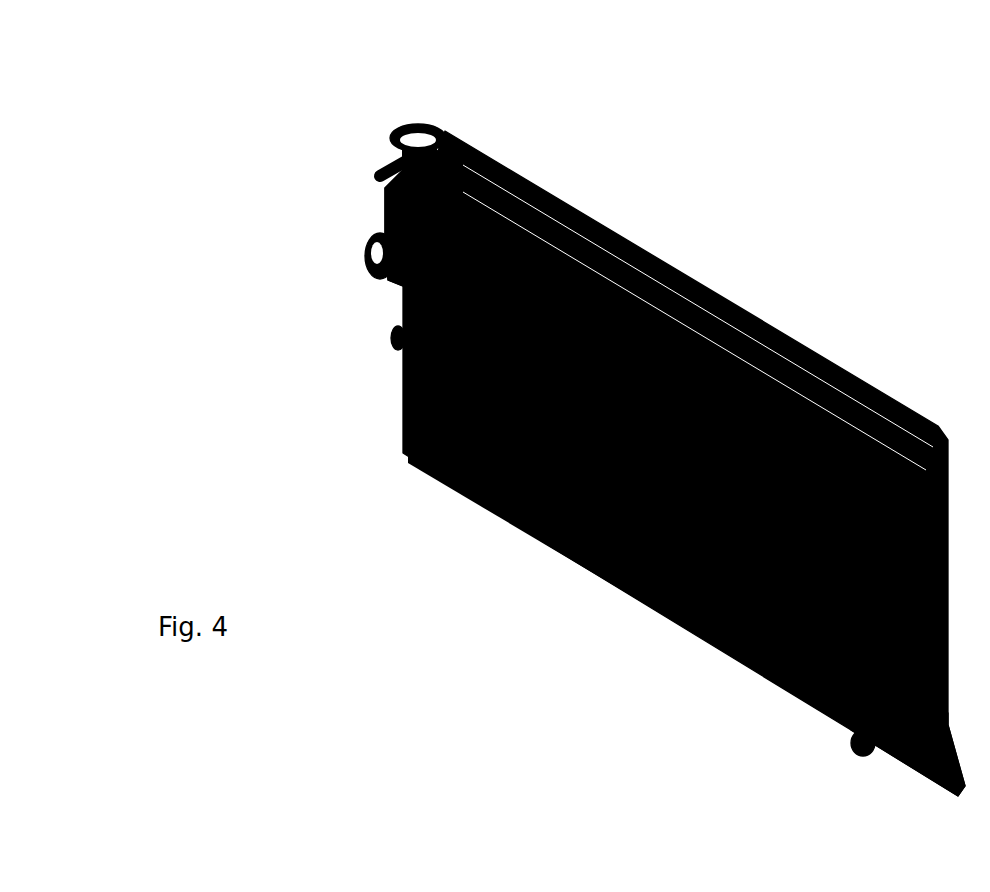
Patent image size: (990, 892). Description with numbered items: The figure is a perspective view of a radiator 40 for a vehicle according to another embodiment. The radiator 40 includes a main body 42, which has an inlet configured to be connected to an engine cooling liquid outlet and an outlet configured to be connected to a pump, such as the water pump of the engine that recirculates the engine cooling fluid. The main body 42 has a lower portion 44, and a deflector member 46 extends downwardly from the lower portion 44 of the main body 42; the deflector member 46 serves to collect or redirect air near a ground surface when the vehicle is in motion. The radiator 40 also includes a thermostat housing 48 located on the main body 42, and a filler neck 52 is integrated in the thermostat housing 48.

The radiator 40 is at (805, 247).
The main body 42 is at (548, 545).
The lower portion 44 is at (618, 623).
The deflector member 46 is at (763, 675).
The thermostat housing 48 is at (398, 272).
The filler neck 52 is at (360, 133).